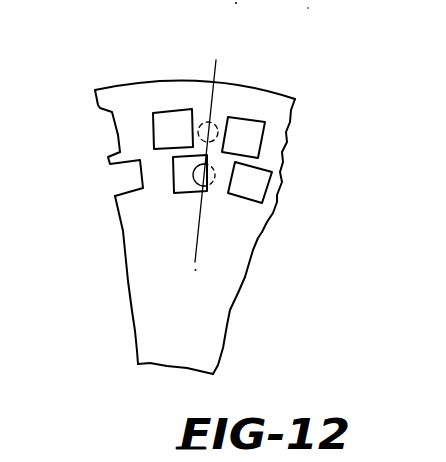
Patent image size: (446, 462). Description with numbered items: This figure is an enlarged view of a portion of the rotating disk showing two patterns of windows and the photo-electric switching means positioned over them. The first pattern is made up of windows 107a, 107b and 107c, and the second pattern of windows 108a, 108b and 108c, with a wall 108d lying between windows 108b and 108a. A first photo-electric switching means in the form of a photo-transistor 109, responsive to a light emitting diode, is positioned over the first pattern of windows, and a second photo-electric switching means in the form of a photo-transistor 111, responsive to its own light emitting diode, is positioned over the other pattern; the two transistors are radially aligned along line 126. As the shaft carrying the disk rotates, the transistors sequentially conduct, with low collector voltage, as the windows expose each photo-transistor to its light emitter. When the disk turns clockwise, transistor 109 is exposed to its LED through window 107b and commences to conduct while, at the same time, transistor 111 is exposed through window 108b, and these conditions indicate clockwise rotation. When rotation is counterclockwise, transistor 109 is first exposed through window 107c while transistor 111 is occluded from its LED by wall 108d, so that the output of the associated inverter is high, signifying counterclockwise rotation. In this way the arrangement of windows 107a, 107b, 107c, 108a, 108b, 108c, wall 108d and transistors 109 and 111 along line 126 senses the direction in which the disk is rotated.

The window 107a is at (110, 136).
The window 107b is at (163, 117).
The window 107c is at (251, 138).
The window 108a is at (125, 173).
The window 108b is at (205, 189).
The window 108c is at (253, 183).
The wall 108d is at (222, 187).
The photo-transistor 109 is at (215, 125).
The photo-transistor 111 is at (161, 241).
The line 126 is at (215, 72).